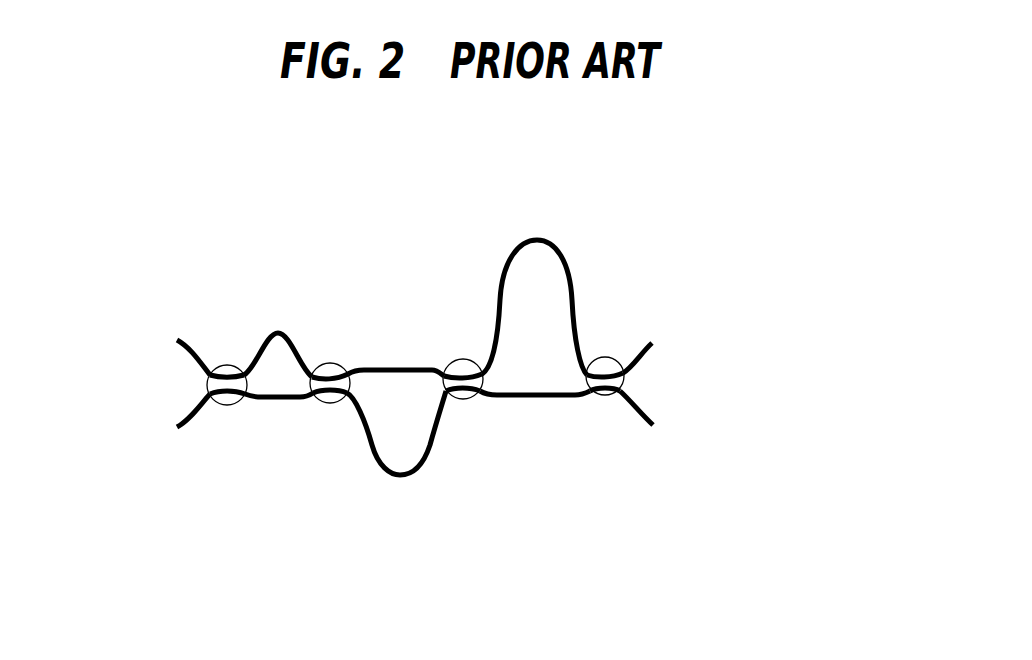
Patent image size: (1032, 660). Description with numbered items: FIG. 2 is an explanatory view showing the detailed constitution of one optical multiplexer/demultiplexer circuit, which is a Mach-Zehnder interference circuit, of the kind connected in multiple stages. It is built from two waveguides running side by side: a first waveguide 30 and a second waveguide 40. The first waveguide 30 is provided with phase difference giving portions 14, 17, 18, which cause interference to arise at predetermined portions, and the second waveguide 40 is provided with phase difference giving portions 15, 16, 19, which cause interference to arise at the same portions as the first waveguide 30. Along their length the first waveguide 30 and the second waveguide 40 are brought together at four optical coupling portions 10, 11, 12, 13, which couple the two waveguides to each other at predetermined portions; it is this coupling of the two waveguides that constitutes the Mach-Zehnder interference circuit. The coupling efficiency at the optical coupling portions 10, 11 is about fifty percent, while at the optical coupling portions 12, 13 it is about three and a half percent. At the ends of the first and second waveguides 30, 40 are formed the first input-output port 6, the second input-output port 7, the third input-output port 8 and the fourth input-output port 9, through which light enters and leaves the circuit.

The first input-output port 6 is at (177, 340).
The second input-output port 7 is at (177, 427).
The third input-output port 8 is at (652, 343).
The fourth input-output port 9 is at (653, 425).
The optical coupling portion 10 is at (233, 404).
The optical coupling portion 11 is at (325, 362).
The optical coupling portion 12 is at (458, 400).
The optical coupling portion 13 is at (600, 357).
The phase difference giving portion of first waveguide 14 is at (302, 398).
The phase difference giving portion of second waveguide 15 is at (272, 330).
The phase difference giving portion of second waveguide 16 is at (418, 367).
The phase difference giving portion of first waveguide 17 is at (412, 476).
The phase difference giving portion of first waveguide 18 is at (556, 397).
The phase difference giving portion of second waveguide 19 is at (533, 238).
The first waveguide 30 is at (490, 503).
The second waveguide 40 is at (430, 256).